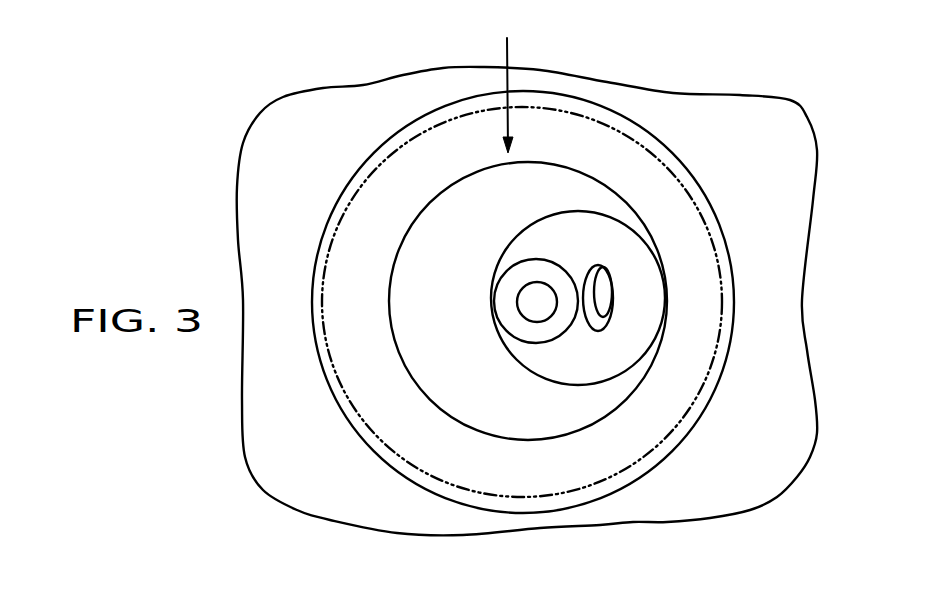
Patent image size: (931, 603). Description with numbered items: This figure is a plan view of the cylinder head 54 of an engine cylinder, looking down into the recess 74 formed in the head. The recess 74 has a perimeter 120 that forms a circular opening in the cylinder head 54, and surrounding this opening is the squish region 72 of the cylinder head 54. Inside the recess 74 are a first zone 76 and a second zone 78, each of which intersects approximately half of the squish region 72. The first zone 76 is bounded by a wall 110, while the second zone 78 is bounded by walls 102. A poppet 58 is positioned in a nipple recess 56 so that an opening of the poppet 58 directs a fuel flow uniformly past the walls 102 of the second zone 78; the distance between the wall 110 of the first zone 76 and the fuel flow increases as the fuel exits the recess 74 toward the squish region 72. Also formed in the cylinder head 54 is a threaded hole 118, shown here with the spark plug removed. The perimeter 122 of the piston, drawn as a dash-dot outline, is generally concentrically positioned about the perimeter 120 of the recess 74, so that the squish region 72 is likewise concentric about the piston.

The cylinder head 54 is at (770, 173).
The nipple recess 56 is at (546, 260).
The poppet 58 is at (517, 295).
The squish region 72 is at (393, 230).
The recess 74 is at (508, 79).
The first zone 76 is at (463, 349).
The second zone 78 is at (598, 370).
The walls of second zone 102 is at (597, 237).
The wall of first zone 110 is at (543, 180).
The threaded hole 118 is at (610, 300).
The perimeter of recess 120 is at (430, 205).
The perimeter of piston 122 is at (460, 117).